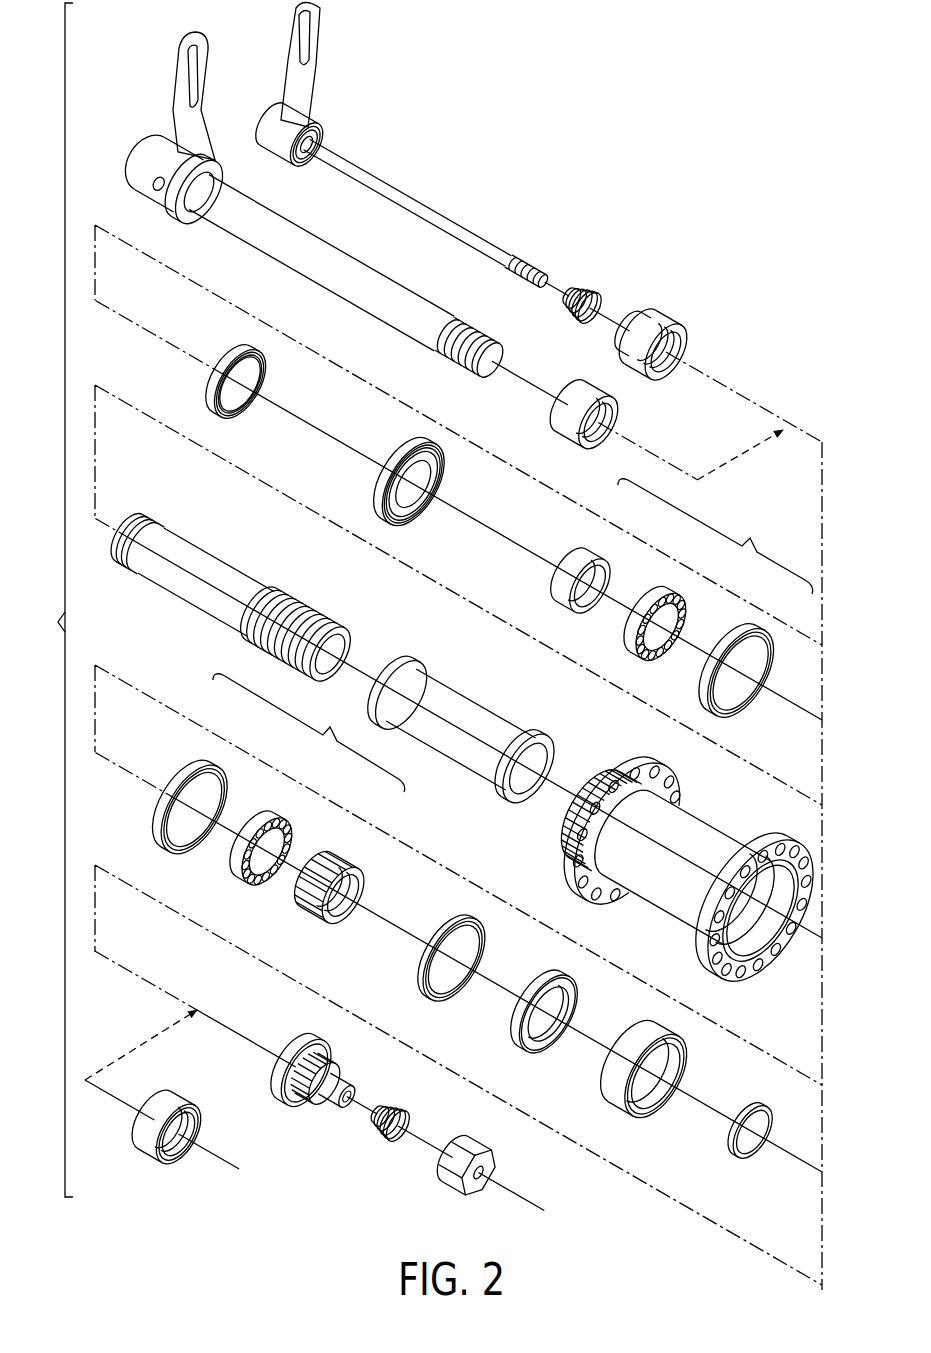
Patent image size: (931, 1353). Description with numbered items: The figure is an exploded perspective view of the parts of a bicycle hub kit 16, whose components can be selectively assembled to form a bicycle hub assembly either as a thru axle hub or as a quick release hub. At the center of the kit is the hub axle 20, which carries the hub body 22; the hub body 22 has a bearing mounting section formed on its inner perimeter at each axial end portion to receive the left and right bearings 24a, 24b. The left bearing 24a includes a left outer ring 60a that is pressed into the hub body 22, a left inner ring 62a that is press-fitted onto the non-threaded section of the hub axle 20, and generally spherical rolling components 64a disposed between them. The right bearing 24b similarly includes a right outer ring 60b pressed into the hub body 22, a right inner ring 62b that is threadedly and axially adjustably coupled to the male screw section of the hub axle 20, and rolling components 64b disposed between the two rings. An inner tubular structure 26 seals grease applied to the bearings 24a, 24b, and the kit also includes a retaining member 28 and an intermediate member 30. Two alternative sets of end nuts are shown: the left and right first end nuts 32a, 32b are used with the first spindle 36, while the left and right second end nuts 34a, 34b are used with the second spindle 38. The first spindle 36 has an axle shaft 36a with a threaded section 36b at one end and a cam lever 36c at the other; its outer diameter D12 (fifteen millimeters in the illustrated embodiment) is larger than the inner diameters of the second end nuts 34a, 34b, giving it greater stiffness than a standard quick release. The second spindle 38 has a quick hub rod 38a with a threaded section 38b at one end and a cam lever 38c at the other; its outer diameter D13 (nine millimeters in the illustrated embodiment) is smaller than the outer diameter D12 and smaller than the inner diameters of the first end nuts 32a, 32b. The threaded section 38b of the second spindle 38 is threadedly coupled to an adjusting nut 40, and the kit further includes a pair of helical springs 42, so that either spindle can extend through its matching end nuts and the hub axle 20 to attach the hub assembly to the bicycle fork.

The bicycle hub kit 16 is at (427, 646).
The hub axle 20 is at (226, 560).
The hub body 22 is at (730, 818).
The left bearing 24a is at (677, 603).
The right bearing 24b is at (272, 802).
The inner tubular structure 26 is at (470, 700).
The retaining member 28 is at (550, 1042).
The intermediate member 30 is at (783, 1118).
The left first end nut 32a is at (630, 412).
The right first end nut 32b is at (187, 1088).
The left second end nut 34a is at (677, 320).
The right second end nut 34b is at (303, 1115).
The first spindle 36 is at (408, 271).
The axle shaft 36a is at (440, 305).
The threaded section 36b is at (483, 338).
The cam lever 36c is at (180, 60).
The second spindle 38 is at (541, 233).
The quick hub rod 38a is at (385, 190).
The threaded section 38b is at (530, 266).
The cam lever 38c is at (321, 35).
The adjusting nut 40 is at (463, 1188).
The helical spring 42 is at (605, 293).
The left outer ring 60a is at (750, 625).
The right outer ring 60b is at (216, 765).
The left inner ring 62a is at (603, 550).
The right inner ring 62b is at (353, 858).
The rolling components 64a is at (679, 595).
The rolling components 64b is at (289, 808).
The outer diameter of the axle shaft D12 is at (308, 322).
The outer diameter of the quick hub rod D13 is at (440, 264).